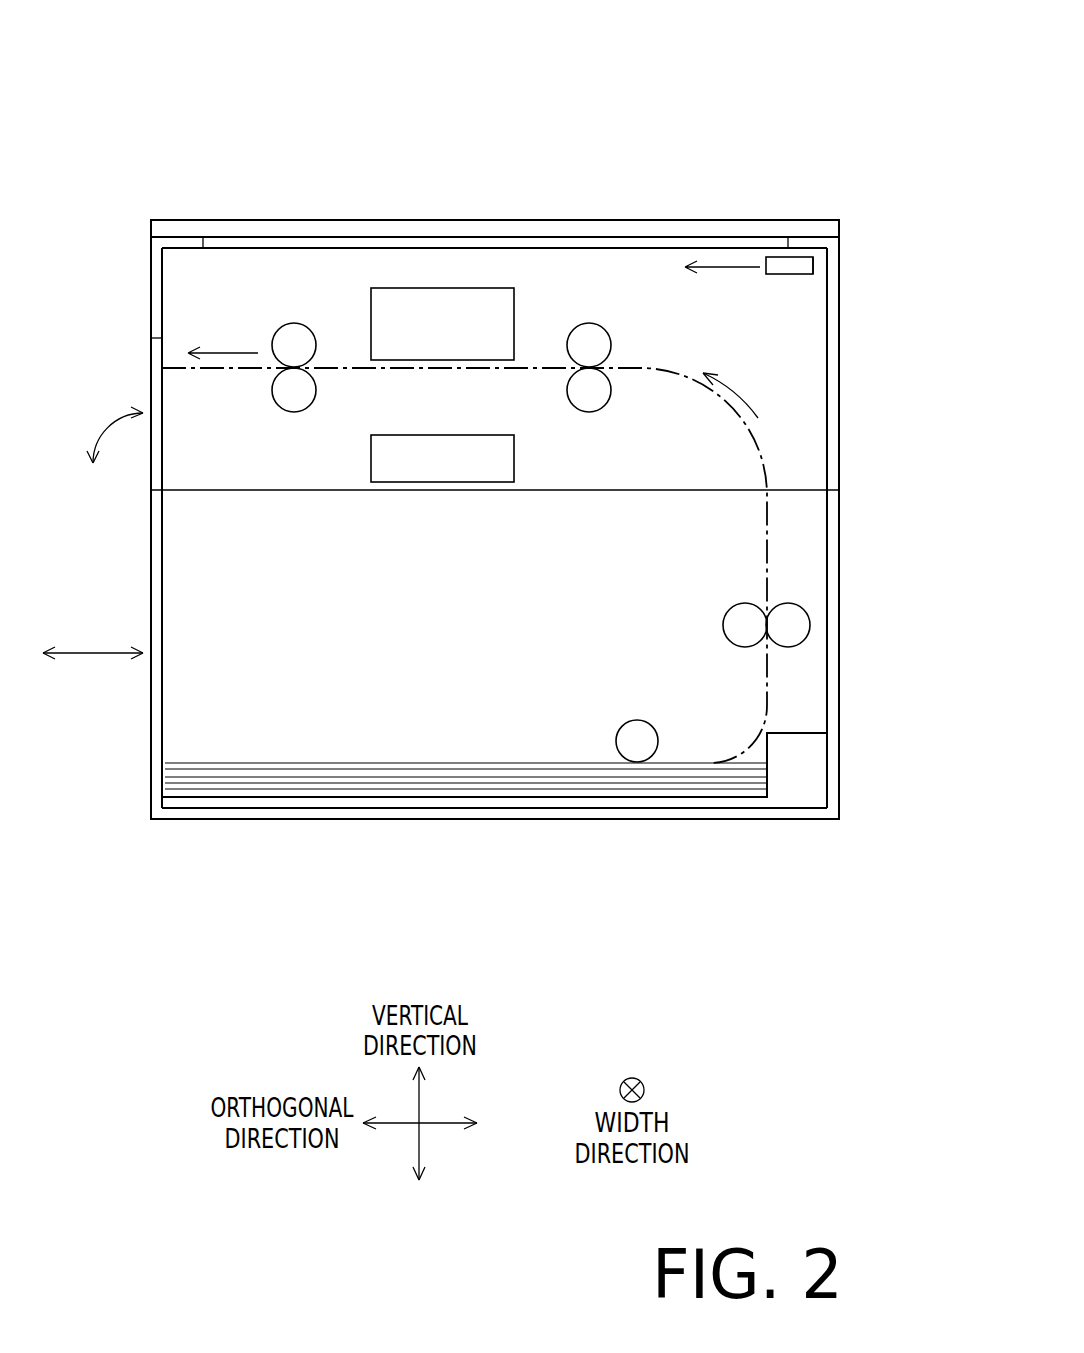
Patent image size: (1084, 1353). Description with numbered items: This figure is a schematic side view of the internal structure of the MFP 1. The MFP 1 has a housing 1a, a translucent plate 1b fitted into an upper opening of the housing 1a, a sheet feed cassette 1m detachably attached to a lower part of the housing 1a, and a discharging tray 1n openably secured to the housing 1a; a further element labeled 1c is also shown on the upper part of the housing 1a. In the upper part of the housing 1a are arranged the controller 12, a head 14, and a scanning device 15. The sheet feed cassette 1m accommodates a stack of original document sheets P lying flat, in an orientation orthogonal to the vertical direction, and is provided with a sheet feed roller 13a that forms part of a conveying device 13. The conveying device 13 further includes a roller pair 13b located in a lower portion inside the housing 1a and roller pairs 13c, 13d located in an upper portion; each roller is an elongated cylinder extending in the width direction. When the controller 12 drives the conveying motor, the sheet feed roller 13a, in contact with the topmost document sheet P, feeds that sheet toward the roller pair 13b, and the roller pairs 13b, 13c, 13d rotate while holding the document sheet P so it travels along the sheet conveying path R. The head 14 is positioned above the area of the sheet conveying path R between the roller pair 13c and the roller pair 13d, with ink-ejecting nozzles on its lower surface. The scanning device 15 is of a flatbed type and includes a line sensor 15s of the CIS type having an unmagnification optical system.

The MFP 1 is at (672, 83).
The housing 1a is at (835, 378).
The translucent plate 1b is at (500, 243).
The top plate 1c is at (254, 238).
The discharging tray 1n is at (150, 390).
The sheet feed cassette 1m is at (150, 735).
The controller 12 is at (514, 455).
The conveying device 13 is at (668, 342).
The sheet feed roller 13a is at (636, 719).
The roller pair 13b is at (745, 647).
The roller pair 13c is at (611, 388).
The roller pair 13d is at (316, 388).
The head 14 is at (460, 339).
The scanning device 15 is at (807, 285).
The line sensor 15s is at (792, 275).
The sheet conveying path R is at (749, 437).
The original document sheet P is at (472, 762).